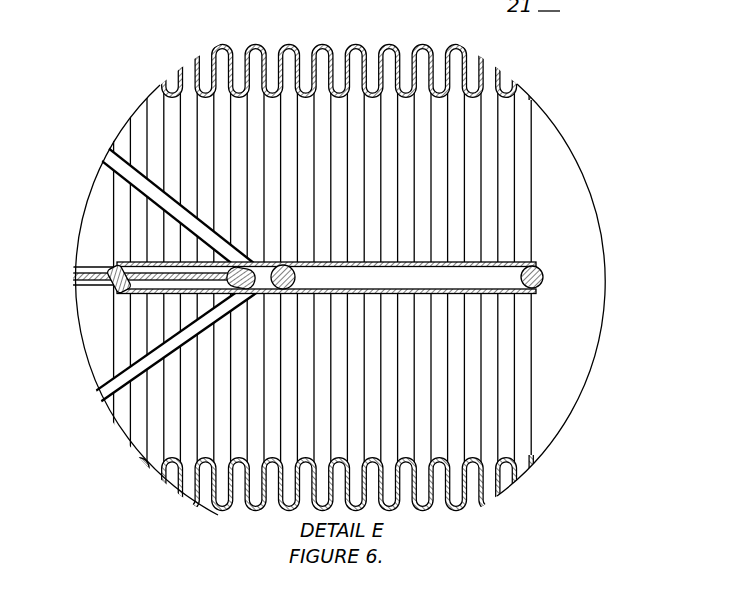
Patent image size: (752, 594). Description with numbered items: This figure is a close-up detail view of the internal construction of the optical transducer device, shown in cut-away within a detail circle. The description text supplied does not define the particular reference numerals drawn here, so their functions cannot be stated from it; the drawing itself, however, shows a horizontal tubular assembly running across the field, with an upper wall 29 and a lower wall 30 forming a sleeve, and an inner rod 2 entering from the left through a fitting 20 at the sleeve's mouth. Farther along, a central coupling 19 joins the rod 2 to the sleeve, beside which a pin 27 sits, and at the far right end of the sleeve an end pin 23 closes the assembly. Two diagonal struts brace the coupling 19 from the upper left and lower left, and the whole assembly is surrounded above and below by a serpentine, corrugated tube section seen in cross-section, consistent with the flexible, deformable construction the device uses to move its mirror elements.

The rod 2 is at (92, 277).
The tube upper wall 29 is at (127, 256).
The tube lower wall 30 is at (510, 291).
The fitting nut 20 is at (108, 294).
The central coupling 19 is at (243, 287).
The pin 27 is at (309, 257).
The end pin 23 is at (552, 260).